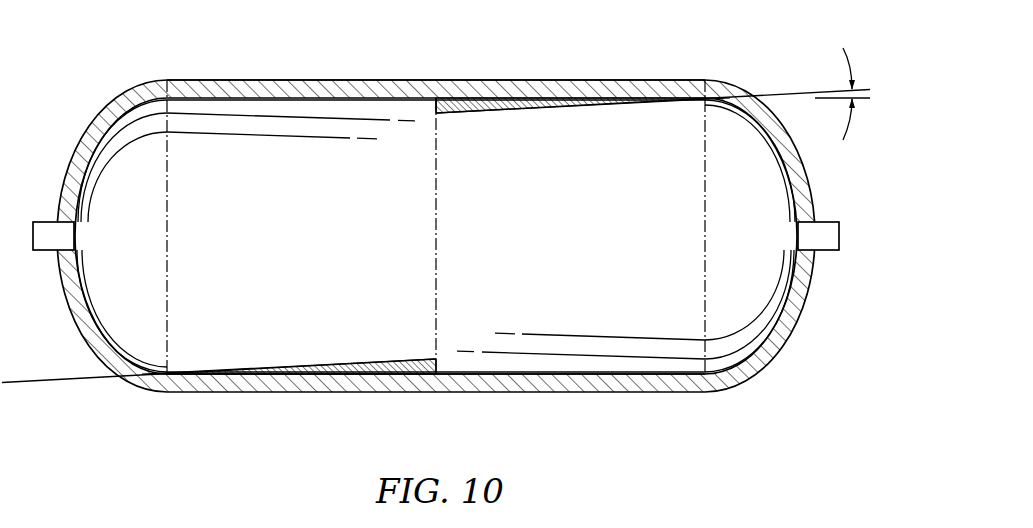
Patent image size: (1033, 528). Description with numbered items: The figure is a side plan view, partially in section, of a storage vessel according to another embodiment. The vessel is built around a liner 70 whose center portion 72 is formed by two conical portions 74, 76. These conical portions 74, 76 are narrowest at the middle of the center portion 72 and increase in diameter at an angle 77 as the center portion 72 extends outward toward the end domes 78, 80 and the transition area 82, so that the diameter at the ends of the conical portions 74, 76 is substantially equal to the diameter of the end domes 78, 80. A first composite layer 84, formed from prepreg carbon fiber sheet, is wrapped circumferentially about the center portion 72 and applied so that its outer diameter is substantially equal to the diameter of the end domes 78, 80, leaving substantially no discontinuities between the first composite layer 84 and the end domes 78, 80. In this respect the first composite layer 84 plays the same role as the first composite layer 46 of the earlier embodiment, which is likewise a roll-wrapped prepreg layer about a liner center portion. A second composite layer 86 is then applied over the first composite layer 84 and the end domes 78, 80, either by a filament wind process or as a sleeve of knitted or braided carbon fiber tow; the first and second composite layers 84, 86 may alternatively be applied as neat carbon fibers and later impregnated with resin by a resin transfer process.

The first composite layer 46 is at (583, 373).
The liner 70 is at (391, 252).
The center portion 72 is at (437, 114).
The conical portion 74 is at (551, 108).
The conical portion 76 is at (312, 108).
The angle 77 is at (847, 67).
The end dome 78 is at (772, 177).
The end dome 80 is at (100, 178).
The transition area 82 is at (166, 80).
The first composite layer 84 is at (445, 97).
The second composite layer 86 is at (277, 90).